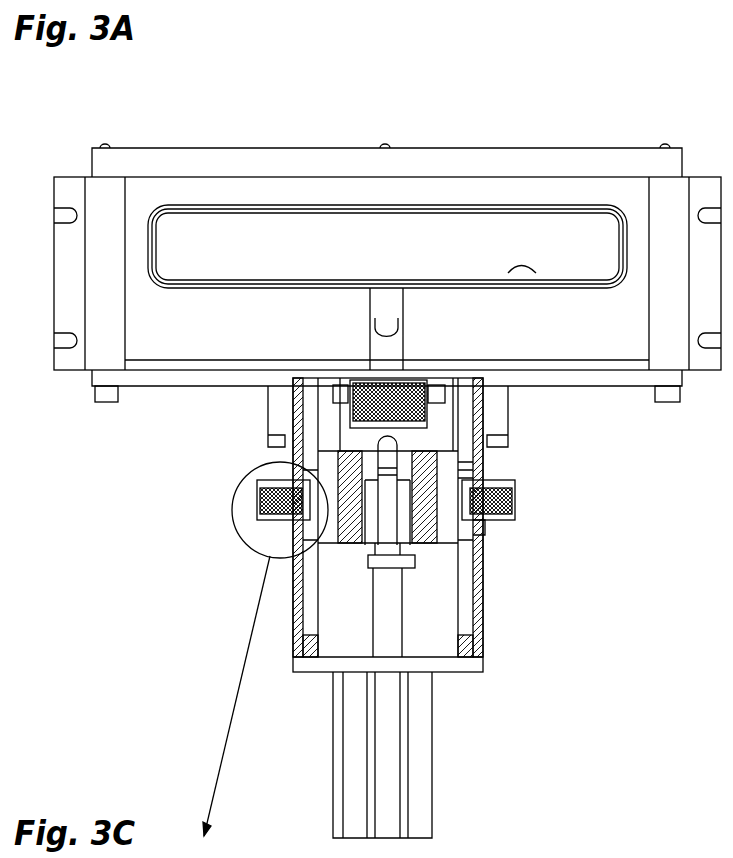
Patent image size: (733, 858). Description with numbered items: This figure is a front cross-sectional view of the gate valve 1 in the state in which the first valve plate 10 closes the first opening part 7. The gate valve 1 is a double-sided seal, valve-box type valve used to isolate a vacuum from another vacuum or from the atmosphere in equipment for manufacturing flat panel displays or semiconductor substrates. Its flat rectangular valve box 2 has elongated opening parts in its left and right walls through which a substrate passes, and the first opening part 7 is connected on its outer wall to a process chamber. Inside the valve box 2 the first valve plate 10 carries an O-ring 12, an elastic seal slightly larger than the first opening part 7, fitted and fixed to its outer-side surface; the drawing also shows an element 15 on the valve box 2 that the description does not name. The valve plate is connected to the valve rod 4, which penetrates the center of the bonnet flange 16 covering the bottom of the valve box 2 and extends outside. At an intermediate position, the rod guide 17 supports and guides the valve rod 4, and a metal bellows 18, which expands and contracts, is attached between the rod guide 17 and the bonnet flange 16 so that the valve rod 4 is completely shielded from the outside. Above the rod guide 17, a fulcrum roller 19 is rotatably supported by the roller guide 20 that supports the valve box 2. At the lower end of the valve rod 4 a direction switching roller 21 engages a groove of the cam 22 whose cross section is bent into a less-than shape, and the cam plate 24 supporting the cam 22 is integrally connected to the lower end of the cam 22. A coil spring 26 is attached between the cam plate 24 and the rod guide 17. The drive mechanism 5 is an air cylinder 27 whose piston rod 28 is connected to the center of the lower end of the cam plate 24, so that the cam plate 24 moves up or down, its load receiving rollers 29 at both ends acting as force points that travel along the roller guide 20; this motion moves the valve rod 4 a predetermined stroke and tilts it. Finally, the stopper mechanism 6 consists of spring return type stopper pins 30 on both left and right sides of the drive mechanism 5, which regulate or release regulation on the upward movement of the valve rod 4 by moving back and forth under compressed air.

The gate valve 1 is at (640, 132).
The valve box 2 is at (54, 284).
The valve rod 4 is at (370, 332).
The drive mechanism 5 is at (312, 752).
The stopper mechanism 6 is at (252, 481).
The first opening part 7 is at (522, 276).
The first valve plate 10 is at (448, 205).
The O-ring 12 is at (322, 205).
The top plate 15 is at (233, 148).
The bonnet flange 16 is at (602, 386).
The rod guide 17 is at (293, 430).
The metal bellows 18 is at (413, 378).
The fulcrum roller 19 is at (483, 404).
The roller guide 20 is at (476, 470).
The direction switching roller 21 is at (418, 548).
The cam 22 is at (348, 545).
The cam plate 24 is at (478, 560).
The coil spring 26 is at (335, 576).
The air cylinder 27 is at (333, 800).
The piston rod 28 is at (403, 630).
The load receiving roller 29 is at (480, 524).
The stopper pin 30 is at (257, 501).